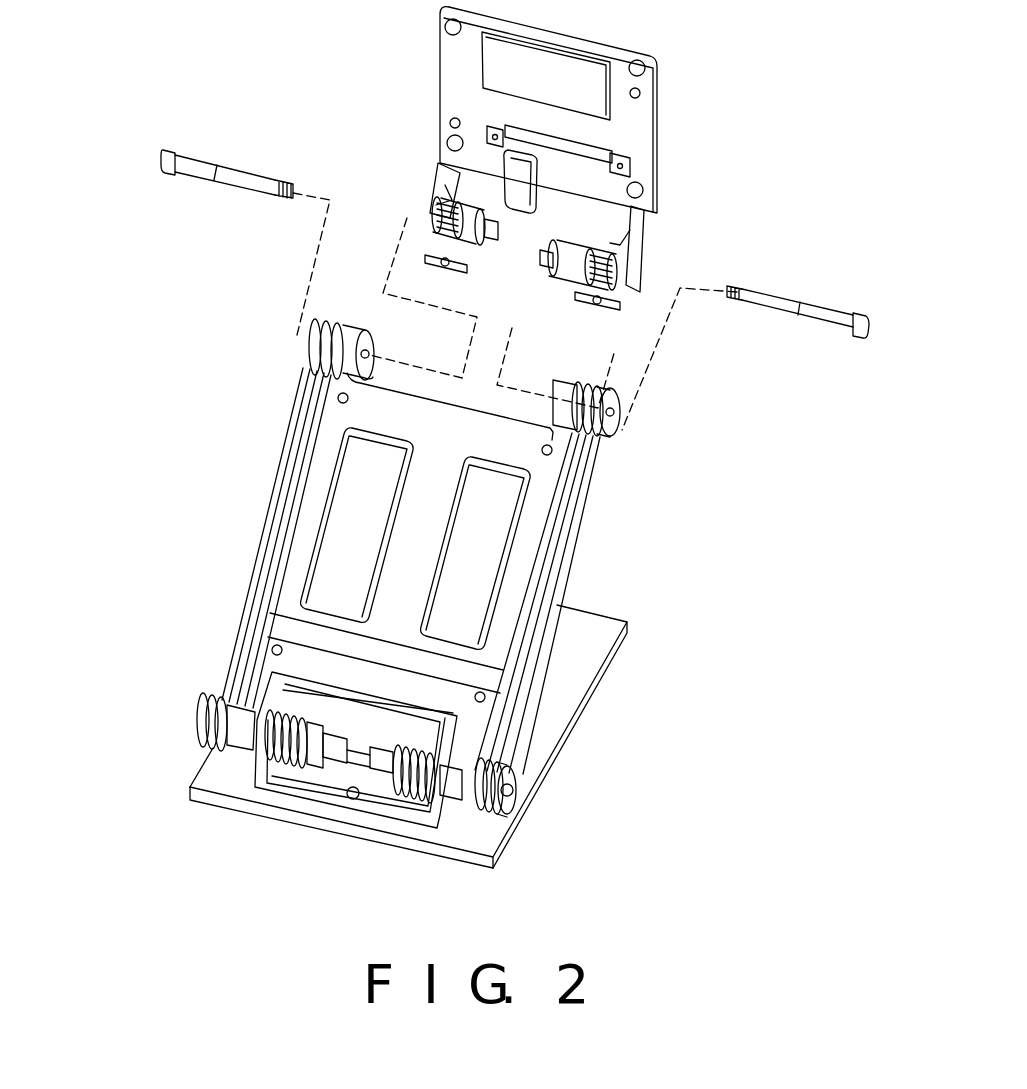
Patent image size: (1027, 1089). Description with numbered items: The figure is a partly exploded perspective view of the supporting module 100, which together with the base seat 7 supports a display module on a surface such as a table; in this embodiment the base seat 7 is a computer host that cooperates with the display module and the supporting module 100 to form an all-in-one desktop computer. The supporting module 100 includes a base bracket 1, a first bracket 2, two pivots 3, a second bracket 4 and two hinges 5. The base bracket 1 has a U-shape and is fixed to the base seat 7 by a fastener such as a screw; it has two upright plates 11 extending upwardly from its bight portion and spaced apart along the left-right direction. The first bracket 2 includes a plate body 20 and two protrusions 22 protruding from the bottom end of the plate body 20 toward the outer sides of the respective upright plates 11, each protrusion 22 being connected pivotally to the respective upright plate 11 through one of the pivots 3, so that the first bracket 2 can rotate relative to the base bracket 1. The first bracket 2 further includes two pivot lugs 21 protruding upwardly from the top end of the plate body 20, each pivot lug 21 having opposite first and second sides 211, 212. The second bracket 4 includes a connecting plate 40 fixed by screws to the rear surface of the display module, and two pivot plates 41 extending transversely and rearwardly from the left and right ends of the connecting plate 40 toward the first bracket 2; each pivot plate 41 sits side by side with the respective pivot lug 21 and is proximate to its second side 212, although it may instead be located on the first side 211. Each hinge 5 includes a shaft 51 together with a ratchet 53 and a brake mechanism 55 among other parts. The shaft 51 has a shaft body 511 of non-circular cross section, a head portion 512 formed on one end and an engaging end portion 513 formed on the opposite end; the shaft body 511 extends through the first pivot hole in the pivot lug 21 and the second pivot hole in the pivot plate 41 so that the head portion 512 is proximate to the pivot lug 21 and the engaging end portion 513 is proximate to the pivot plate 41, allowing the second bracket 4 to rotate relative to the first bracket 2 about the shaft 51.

The supporting module 100 is at (186, 703).
The base bracket 1 is at (365, 813).
The upright plates 11 is at (257, 770).
The base seat 7 is at (563, 740).
The pivots 3 is at (297, 760).
The first bracket 2 is at (320, 433).
The plate body 20 is at (318, 503).
The pivot lugs 21 is at (347, 360).
The first side 211 is at (343, 322).
The second side 212 is at (368, 350).
The protrusions 22 is at (252, 700).
The second bracket 4 is at (430, 91).
The connecting plate 40 is at (450, 57).
The pivot plates 41 is at (457, 175).
The hinges 5 is at (547, 270).
The ratchet 53 is at (452, 200).
The brake mechanism 55 is at (577, 293).
The shaft 51 is at (190, 162).
The shaft body 511 is at (213, 172).
The head portion 512 is at (167, 152).
The engaging end portion 513 is at (288, 180).